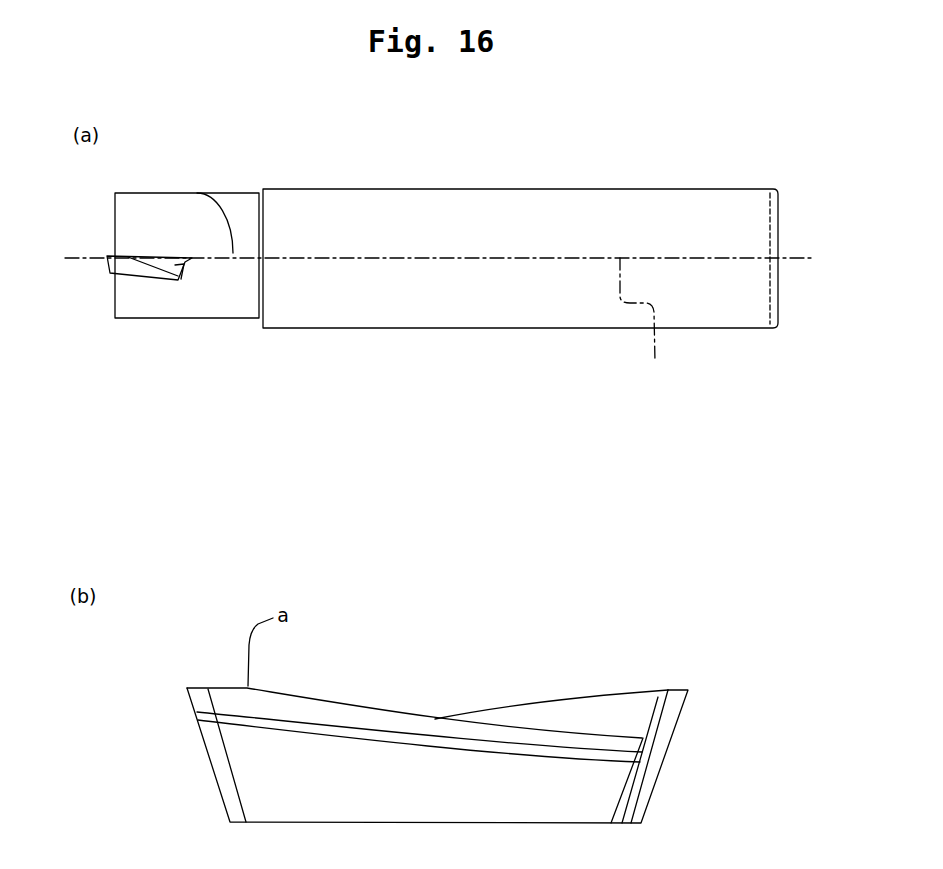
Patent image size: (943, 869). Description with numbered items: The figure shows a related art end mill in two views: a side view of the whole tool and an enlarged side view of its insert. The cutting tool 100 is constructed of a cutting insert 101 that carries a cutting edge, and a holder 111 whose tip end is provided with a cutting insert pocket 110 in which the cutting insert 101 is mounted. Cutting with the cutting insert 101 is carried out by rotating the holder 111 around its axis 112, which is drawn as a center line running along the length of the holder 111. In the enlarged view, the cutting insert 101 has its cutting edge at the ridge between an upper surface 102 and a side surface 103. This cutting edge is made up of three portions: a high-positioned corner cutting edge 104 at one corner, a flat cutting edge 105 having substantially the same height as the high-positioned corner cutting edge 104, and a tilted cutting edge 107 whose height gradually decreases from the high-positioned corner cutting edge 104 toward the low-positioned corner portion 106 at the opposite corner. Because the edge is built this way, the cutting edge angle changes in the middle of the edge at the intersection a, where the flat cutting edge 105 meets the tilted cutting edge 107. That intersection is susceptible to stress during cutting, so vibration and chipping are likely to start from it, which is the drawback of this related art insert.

The cutting tool 100 is at (719, 184).
The cutting insert 101 is at (125, 267).
The upper surface 102 is at (575, 710).
The side surface 103 is at (248, 768).
The high-positioned corner cutting edge 104 is at (187, 688).
The flat cutting edge 105 is at (197, 679).
The low-positioned corner portion 106 is at (641, 735).
The tilted cutting edge 107 is at (555, 729).
The cutting insert pocket 110 is at (184, 281).
The holder 111 is at (528, 212).
The axis 112 is at (646, 323).